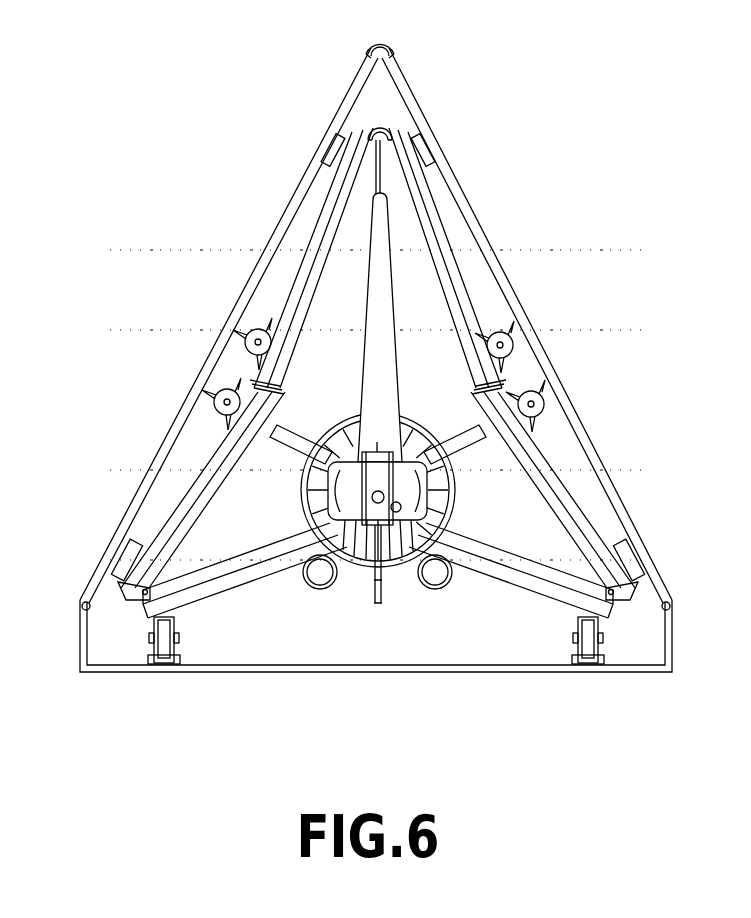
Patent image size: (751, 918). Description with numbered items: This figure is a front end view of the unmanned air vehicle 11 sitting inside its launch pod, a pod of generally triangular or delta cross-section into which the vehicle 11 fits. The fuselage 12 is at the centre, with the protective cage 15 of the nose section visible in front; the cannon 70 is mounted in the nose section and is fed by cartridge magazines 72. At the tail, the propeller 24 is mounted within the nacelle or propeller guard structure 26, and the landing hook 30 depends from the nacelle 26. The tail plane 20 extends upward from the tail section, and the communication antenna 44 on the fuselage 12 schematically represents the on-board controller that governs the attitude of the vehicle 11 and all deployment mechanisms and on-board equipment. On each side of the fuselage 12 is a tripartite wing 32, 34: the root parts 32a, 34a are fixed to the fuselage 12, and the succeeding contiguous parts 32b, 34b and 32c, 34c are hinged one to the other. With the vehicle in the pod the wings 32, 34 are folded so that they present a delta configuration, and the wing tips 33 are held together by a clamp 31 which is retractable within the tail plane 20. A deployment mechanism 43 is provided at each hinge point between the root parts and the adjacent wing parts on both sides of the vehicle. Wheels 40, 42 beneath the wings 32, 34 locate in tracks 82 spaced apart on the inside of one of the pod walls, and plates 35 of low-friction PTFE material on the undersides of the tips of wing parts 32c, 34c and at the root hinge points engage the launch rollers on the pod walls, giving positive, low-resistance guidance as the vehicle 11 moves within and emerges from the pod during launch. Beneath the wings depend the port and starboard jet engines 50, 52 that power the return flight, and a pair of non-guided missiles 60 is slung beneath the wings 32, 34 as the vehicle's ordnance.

The unmanned air vehicle 11 is at (256, 220).
The fuselage 12 is at (420, 490).
The protective cage 15 is at (402, 470).
The tail plane 20 is at (388, 283).
The propeller 24 is at (378, 548).
The nacelle or propeller guard structure 26 is at (352, 418).
The landing hook 30 is at (378, 606).
The clamp 31 is at (386, 56).
The tripartite wing 32 is at (524, 424).
The root part 32a is at (500, 572).
The wing part 32b is at (572, 482).
The wing part 32c is at (428, 200).
The wing tips 33 is at (376, 127).
The tripartite wing 34 is at (247, 419).
The root part 34a is at (215, 590).
The wing part 34b is at (205, 468).
The wing part 34c is at (330, 215).
The plates 35 is at (343, 140).
The wheel 40 is at (590, 640).
The wheel 42 is at (165, 640).
The deployment mechanism 43 is at (140, 600).
The communication antenna 44 is at (390, 450).
The jet engine 50 is at (435, 592).
The jet engine 52 is at (320, 592).
The missiles 60 is at (226, 390).
The cannon 70 is at (372, 497).
The cartridge magazines 72 is at (297, 432).
The tracks 82 is at (178, 662).